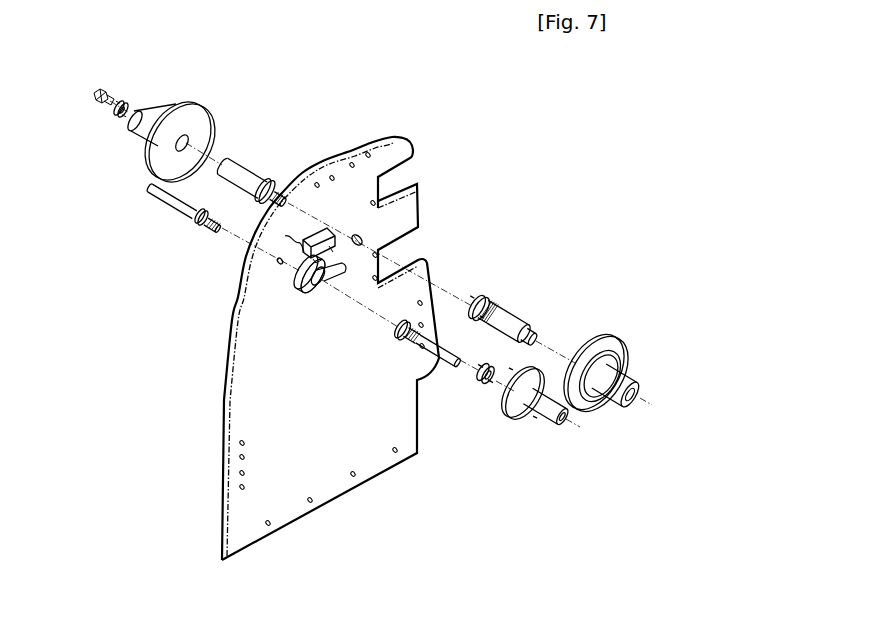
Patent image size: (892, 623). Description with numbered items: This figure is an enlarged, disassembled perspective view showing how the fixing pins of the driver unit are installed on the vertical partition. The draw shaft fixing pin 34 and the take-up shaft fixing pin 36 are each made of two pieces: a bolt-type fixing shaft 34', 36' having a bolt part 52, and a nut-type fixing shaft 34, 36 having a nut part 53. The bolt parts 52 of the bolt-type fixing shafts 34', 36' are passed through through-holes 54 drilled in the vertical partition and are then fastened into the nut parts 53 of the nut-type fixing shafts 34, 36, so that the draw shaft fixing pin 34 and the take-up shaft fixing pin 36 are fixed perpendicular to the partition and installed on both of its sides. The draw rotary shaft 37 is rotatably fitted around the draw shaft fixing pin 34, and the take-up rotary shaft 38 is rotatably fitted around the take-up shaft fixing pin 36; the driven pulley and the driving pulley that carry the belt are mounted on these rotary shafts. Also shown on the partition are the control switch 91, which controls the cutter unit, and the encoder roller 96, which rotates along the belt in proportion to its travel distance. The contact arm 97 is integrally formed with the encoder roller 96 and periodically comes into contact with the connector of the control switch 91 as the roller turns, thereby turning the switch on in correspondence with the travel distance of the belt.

The draw shaft fixing pin 34 is at (444, 381).
The bolt-type fixing shaft 34' is at (164, 222).
The take-up shaft fixing pin 36 is at (508, 302).
The bolt-type fixing shaft 36' is at (252, 153).
The draw rotary shaft 37 is at (545, 416).
The take-up rotary shaft 38 is at (152, 108).
The bolt part 52 is at (278, 204).
The nut part 53 is at (412, 330).
The through-hole 54 is at (358, 237).
The control switch 91 is at (302, 270).
The encoder roller 96 is at (318, 283).
The contact arm 97 is at (337, 293).